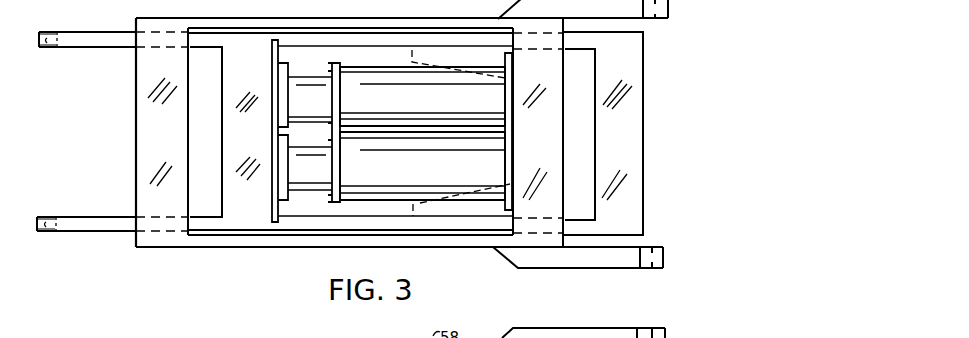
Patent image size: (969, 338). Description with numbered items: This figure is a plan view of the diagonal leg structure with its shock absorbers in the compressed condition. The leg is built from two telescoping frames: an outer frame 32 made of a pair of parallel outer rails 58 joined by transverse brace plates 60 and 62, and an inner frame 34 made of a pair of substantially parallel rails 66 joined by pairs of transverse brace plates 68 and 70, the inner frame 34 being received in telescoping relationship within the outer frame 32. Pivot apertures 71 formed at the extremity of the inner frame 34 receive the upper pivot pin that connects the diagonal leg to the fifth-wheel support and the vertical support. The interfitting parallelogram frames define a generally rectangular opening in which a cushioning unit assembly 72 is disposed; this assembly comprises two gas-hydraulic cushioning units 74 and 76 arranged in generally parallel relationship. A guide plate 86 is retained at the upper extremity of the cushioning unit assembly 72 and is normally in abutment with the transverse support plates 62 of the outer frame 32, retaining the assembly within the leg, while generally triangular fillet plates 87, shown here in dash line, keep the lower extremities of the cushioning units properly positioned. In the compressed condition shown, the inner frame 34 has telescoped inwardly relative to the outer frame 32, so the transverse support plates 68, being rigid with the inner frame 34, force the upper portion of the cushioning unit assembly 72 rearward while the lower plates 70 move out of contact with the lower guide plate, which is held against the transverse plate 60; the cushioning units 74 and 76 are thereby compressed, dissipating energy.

The outer frame 32 is at (296, 258).
The inner frame 34 is at (122, 239).
The outer rails 58 is at (467, 22).
The transverse brace plate 60 is at (552, 134).
The transverse brace plate 62 is at (143, 126).
The inner rails 66 is at (121, 41).
The transverse brace plates 68 is at (232, 127).
The transverse brace plates 70 is at (628, 152).
The pivot apertures 71 is at (53, 50).
The cushioning unit assembly 72 is at (398, 208).
The gas-hydraulic cushioning unit 74 is at (467, 181).
The gas-hydraulic cushioning unit 76 is at (462, 109).
The guide plate 86 is at (272, 194).
The fillet plates 87 is at (427, 50).